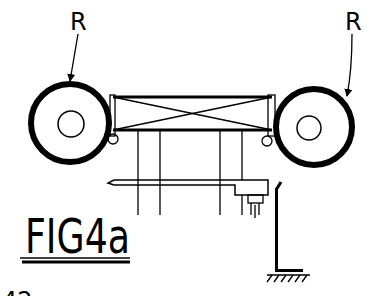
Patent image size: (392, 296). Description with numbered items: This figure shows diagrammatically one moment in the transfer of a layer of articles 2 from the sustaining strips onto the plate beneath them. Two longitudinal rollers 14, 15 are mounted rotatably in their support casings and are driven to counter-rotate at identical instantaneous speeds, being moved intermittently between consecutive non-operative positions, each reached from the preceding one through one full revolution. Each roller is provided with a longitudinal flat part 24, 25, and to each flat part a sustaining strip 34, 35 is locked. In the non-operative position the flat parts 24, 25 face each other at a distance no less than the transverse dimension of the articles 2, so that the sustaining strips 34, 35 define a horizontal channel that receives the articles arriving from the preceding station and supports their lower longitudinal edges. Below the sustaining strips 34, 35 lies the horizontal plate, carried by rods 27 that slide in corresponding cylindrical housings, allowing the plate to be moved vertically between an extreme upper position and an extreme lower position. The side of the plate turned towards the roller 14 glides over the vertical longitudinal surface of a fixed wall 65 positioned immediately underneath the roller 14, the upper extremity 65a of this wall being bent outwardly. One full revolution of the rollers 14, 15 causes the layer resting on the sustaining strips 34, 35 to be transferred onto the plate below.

The articles 2 is at (210, 107).
The longitudinal roller 14 is at (326, 86).
The longitudinal roller 15 is at (45, 86).
The longitudinal flat part 24 is at (274, 117).
The longitudinal flat part 25 is at (116, 95).
The rods 27 is at (250, 215).
The sustaining strip 34 is at (270, 150).
The sustaining strip 35 is at (114, 145).
The fixed wall 65 is at (279, 246).
The upper extremity 65a is at (279, 188).